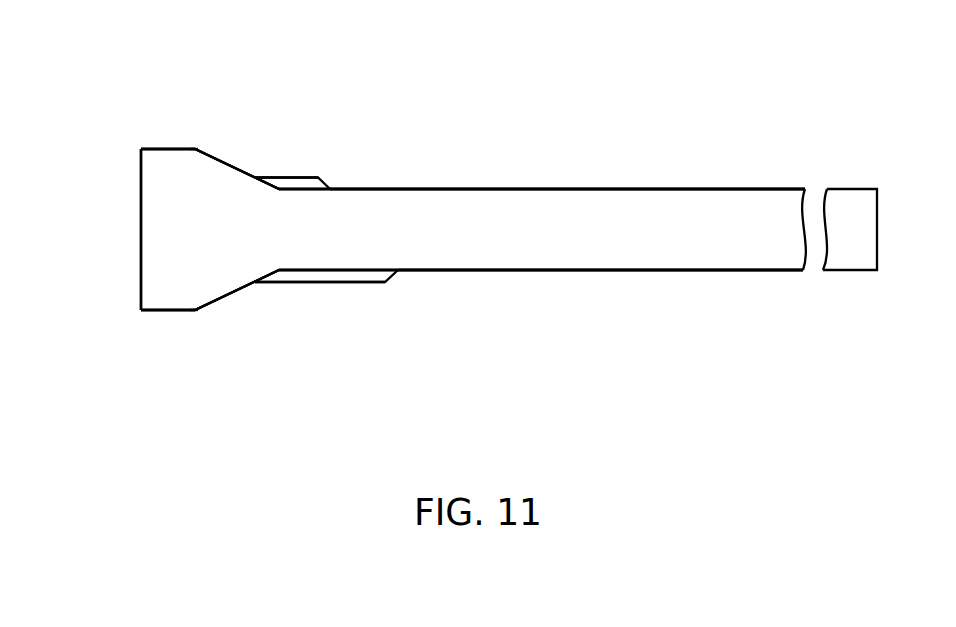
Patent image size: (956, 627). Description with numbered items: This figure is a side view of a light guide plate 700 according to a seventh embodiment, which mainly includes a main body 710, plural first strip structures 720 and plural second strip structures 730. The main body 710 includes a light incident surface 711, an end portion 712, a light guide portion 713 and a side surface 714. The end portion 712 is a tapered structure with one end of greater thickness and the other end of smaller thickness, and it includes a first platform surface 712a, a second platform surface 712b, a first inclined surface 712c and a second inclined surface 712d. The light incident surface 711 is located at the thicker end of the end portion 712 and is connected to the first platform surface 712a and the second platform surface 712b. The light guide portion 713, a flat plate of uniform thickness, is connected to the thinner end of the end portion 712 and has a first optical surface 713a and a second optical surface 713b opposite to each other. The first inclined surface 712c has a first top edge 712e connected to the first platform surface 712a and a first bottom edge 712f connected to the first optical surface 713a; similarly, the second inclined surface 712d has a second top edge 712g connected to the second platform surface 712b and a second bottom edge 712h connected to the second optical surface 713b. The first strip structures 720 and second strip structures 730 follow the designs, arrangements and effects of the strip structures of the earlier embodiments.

The light guide plate 700 is at (59, 29).
The main body 710 is at (793, 183).
The light incident surface 711 is at (140, 197).
The end portion 712 is at (222, 228).
The first platform surface 712a is at (172, 148).
The second platform surface 712b is at (170, 311).
The first inclined surface 712c is at (238, 169).
The second inclined surface 712d is at (238, 290).
The first top edge 712e is at (192, 148).
The first bottom edge 712f is at (277, 177).
The second top edge 712g is at (193, 311).
The second bottom edge 712h is at (275, 283).
The light guide portion 713 is at (592, 203).
The first optical surface 713a is at (698, 189).
The second optical surface 713b is at (700, 271).
The side surface 714 is at (876, 212).
The first strip structures 720 is at (313, 183).
The second strip structures 730 is at (378, 276).